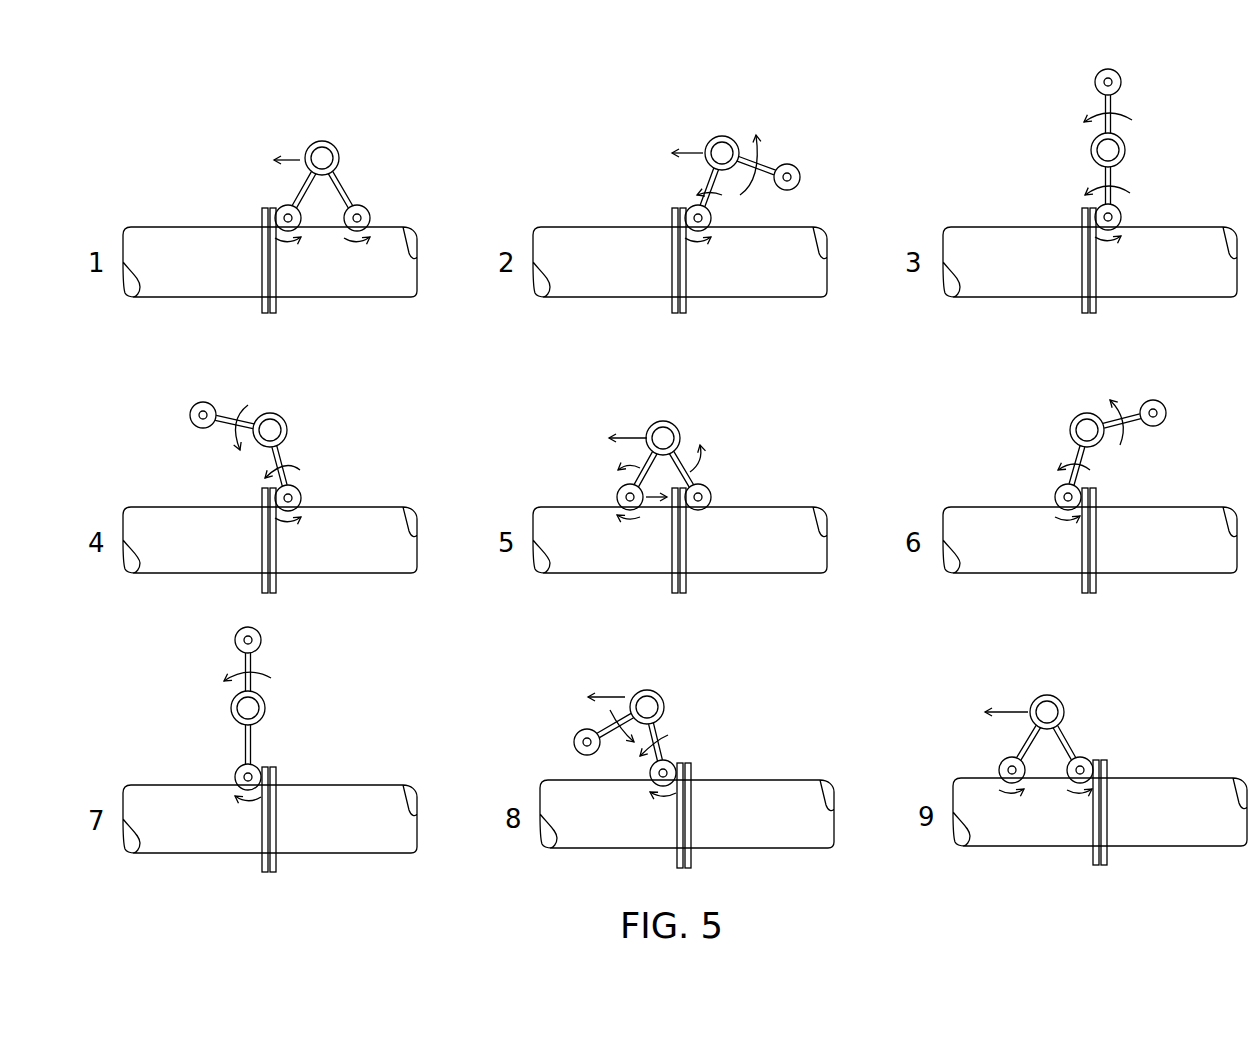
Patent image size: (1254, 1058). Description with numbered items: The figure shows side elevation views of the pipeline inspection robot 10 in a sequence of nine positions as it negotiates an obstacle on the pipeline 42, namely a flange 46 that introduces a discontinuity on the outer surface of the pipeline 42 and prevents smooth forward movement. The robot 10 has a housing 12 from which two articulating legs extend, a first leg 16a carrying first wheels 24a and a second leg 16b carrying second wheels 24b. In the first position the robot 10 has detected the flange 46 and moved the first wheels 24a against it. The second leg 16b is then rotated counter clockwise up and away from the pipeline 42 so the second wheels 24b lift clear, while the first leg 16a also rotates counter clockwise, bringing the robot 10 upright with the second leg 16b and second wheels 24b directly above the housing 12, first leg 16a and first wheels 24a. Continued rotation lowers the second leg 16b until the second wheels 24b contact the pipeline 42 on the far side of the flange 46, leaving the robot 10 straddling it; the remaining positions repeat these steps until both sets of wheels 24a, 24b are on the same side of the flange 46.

The pipeline inspection robot 10 is at (281, 113).
The housing 12 is at (334, 146).
The first leg 16a is at (292, 198).
The second leg 16b is at (347, 192).
The first wheels 24a is at (283, 207).
The second wheels 24b is at (371, 212).
The pipeline 42 is at (161, 240).
The flange 46 is at (262, 217).